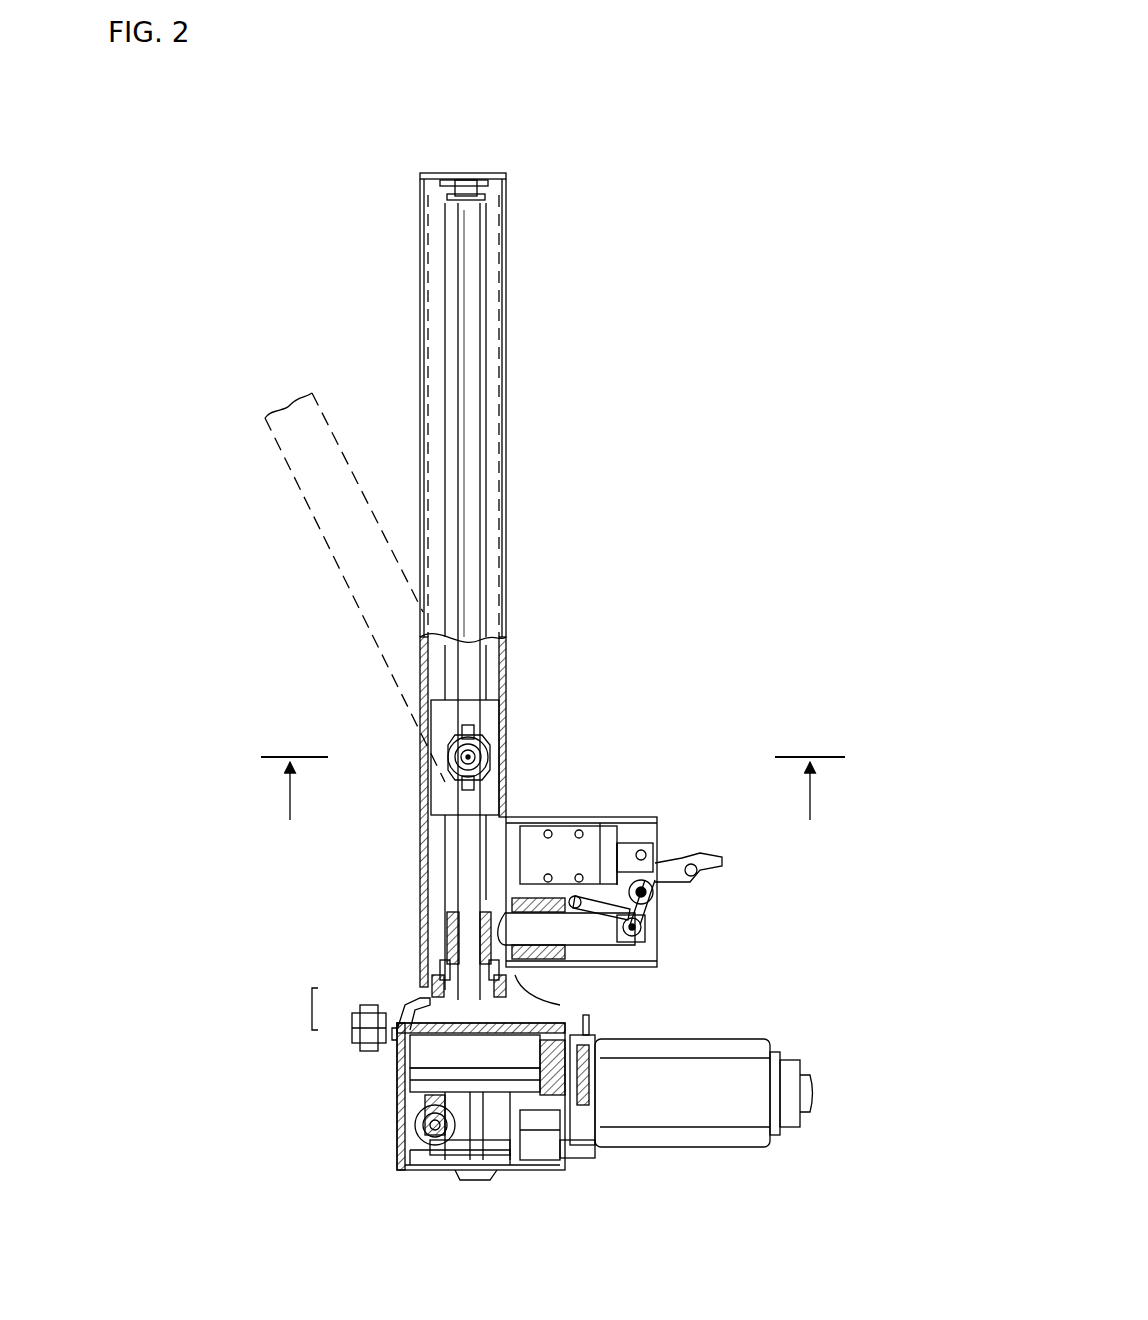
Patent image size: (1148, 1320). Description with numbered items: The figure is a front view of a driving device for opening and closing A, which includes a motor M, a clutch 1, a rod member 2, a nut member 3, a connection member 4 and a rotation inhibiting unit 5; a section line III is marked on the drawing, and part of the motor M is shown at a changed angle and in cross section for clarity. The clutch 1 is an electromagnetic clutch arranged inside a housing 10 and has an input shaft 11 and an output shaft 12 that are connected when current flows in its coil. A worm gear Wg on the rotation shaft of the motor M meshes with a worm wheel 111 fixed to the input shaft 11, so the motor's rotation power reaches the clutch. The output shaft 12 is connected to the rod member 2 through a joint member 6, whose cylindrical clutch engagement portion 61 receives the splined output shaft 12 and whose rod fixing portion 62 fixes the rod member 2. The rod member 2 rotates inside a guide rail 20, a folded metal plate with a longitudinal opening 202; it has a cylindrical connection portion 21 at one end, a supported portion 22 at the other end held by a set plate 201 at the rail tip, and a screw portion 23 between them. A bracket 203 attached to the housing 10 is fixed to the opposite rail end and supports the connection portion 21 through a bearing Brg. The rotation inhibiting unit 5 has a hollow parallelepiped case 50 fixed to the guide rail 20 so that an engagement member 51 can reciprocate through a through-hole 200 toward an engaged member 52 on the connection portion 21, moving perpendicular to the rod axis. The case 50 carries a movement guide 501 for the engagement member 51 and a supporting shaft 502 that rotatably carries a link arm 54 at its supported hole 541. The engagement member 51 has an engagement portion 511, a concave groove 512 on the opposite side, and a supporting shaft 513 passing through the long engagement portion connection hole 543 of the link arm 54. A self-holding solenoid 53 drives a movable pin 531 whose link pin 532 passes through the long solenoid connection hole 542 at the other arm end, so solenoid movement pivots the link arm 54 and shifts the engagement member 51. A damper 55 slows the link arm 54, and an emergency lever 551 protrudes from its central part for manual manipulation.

The driving device for opening and closing A is at (700, 218).
The clutch 1 is at (450, 1080).
The rod member 2 is at (470, 482).
The nut member 3 is at (497, 722).
The connection member 4 is at (312, 490).
The rotation inhibiting unit 5 is at (690, 752).
The joint member 6 is at (308, 1009).
The housing 10 is at (400, 1070).
The input shaft 11 is at (478, 1178).
The output shaft 12 is at (392, 1040).
The guide rail 20 is at (506, 340).
The connection portion 21 is at (442, 963).
The supported portion 22 is at (466, 183).
The screw portion 23 is at (468, 430).
The case 50 is at (535, 823).
The engagement member 51 is at (606, 940).
The engaged member 52 is at (455, 948).
The solenoid 53 is at (562, 832).
The link arm 54 is at (652, 880).
The damper 55 is at (593, 900).
The clutch engagement portion 61 is at (358, 1020).
The rod fixing portion 62 is at (428, 990).
The worm wheel 111 is at (538, 1165).
The through-hole 200 is at (455, 893).
The set plate 201 is at (486, 188).
The opening 202 is at (480, 262).
The bracket 203 is at (590, 1030).
The movement guide 501 is at (555, 1002).
The supporting shaft 502 is at (655, 907).
The engagement portion 511 is at (478, 926).
The concave groove 512 is at (640, 945).
The supporting shaft 513 is at (655, 937).
The movable pin 531 is at (620, 842).
The link pin 532 is at (648, 850).
The supported hole 541 is at (655, 891).
The solenoid connection hole 542 is at (655, 858).
The engagement portion connection hole 543 is at (650, 930).
The emergency lever 551 is at (725, 875).
The bearing Brg is at (430, 982).
The worm gear Wg is at (395, 1130).
The motor M is at (720, 1080).
The section line III is at (553, 801).